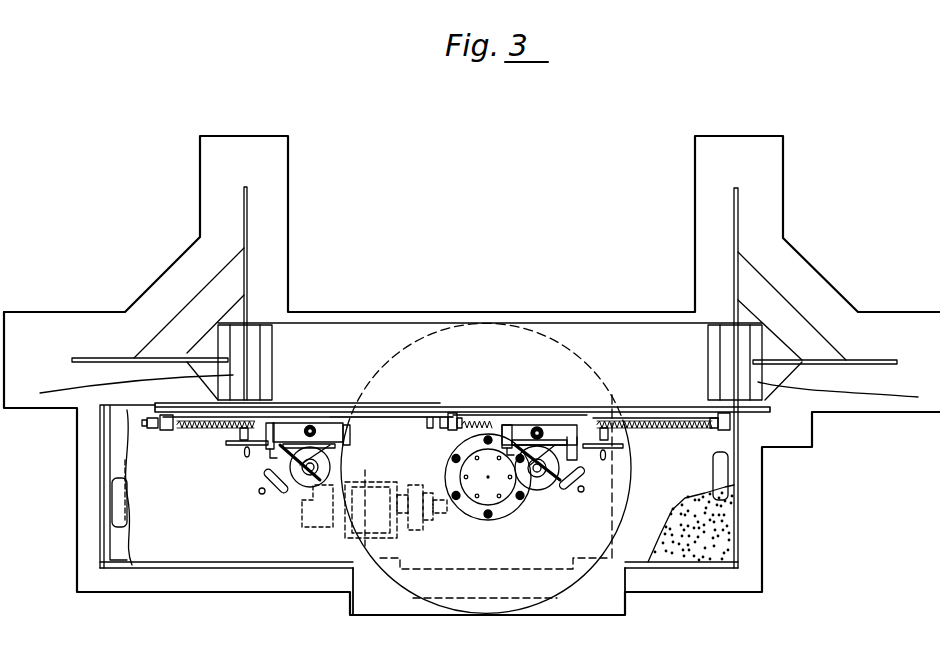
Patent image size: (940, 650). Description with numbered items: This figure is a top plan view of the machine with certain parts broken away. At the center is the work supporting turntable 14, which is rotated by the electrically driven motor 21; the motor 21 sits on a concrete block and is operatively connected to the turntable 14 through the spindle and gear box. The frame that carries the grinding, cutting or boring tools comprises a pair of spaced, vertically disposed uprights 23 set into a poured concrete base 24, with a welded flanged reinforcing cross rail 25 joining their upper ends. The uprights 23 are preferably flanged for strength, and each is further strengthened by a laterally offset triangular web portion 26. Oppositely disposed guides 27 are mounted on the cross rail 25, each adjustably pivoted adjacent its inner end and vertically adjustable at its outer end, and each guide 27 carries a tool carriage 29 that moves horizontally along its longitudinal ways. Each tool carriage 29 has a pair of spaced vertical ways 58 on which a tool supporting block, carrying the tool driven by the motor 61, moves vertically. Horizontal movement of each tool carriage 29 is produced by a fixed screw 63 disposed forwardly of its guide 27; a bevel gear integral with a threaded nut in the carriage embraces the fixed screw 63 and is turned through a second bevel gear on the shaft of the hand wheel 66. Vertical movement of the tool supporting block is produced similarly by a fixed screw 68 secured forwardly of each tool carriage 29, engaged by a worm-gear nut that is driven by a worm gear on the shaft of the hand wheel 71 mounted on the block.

The work supporting turntable 14 is at (522, 563).
The electrically driven motor 21 is at (318, 506).
The uprights 23 is at (68, 396).
The poured concrete base 24 is at (262, 173).
The cross rail 25 is at (345, 362).
The triangular web portion 26 is at (100, 357).
The guides 27 is at (388, 413).
The tool carriage 29 is at (288, 426).
The vertical ways 58 is at (268, 436).
The motor 61 is at (305, 483).
The fixed screw 63 is at (207, 428).
The hand wheel 66 is at (232, 446).
The fixed screw 68 is at (315, 427).
The hand wheel 71 is at (265, 493).